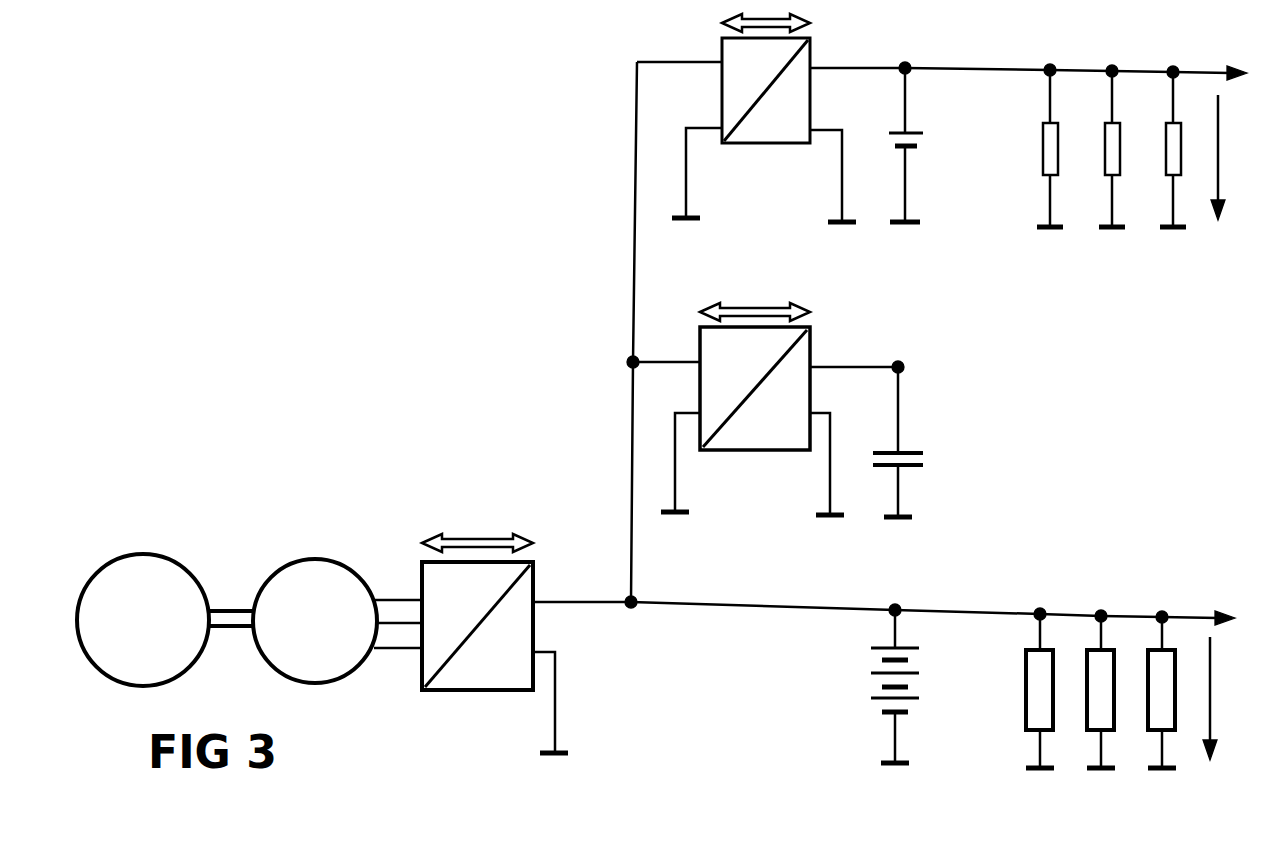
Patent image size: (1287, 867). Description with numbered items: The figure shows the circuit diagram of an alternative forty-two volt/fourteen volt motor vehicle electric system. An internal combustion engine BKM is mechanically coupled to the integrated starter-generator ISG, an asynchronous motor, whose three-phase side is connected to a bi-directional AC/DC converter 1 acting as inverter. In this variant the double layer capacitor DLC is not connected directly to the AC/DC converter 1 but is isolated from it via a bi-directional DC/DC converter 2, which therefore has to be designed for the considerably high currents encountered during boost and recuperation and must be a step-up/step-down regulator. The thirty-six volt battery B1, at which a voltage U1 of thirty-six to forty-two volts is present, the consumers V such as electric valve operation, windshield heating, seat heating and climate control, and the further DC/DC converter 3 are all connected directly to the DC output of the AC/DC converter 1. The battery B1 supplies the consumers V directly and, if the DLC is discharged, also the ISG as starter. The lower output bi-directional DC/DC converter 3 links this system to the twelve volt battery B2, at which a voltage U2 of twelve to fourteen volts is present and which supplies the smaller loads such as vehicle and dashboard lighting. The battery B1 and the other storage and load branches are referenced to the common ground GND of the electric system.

The bi-directional AC/DC converter 1 is at (482, 676).
The bi-directional DC/DC converter 2 is at (759, 437).
The lower output bi-directional DC/DC converter 3 is at (768, 143).
The internal combustion engine BKM is at (181, 639).
The integrated starter-generator ISG is at (347, 641).
The 36 V battery B1 is at (914, 686).
The 12 V battery B2 is at (928, 145).
The double layer capacitor DLC is at (906, 450).
The consumers V is at (1160, 698).
The voltage U1 is at (1233, 698).
The voltage U2 is at (1242, 157).
The ground GND is at (895, 793).